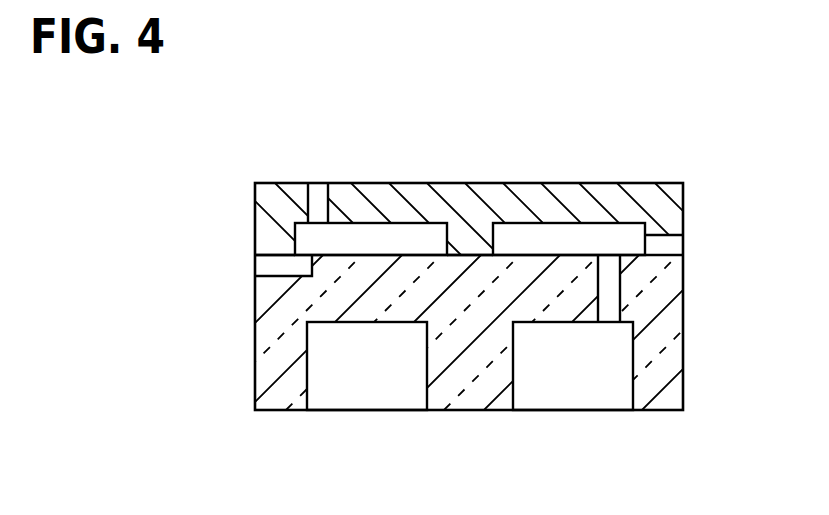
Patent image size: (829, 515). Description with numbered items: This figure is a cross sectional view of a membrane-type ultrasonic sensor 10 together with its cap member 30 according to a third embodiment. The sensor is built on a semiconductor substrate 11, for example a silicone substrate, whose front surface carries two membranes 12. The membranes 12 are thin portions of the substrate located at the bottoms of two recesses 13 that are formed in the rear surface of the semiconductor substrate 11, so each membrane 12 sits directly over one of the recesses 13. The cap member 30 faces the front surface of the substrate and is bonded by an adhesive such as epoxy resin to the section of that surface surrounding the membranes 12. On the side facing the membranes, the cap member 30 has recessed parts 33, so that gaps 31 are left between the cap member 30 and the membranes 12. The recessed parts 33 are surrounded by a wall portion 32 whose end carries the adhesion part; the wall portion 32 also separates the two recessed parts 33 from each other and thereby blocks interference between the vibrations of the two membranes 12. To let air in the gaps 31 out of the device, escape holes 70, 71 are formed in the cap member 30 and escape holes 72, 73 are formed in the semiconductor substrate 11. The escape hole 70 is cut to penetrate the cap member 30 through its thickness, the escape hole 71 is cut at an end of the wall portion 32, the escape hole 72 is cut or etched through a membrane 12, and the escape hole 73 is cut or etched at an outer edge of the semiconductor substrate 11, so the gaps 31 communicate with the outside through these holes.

The ultrasonic sensor 10 is at (689, 298).
The semiconductor substrate 11 is at (672, 355).
The membranes 12 is at (372, 305).
The recesses 13 is at (307, 358).
The cap member 30 is at (587, 197).
The gaps 31 is at (365, 237).
The wall portion 32 is at (465, 240).
The recessed parts 33 is at (413, 220).
The escape hole 70 is at (318, 197).
The escape hole 71 is at (672, 245).
The escape hole 72 is at (612, 310).
The escape hole 73 is at (272, 270).